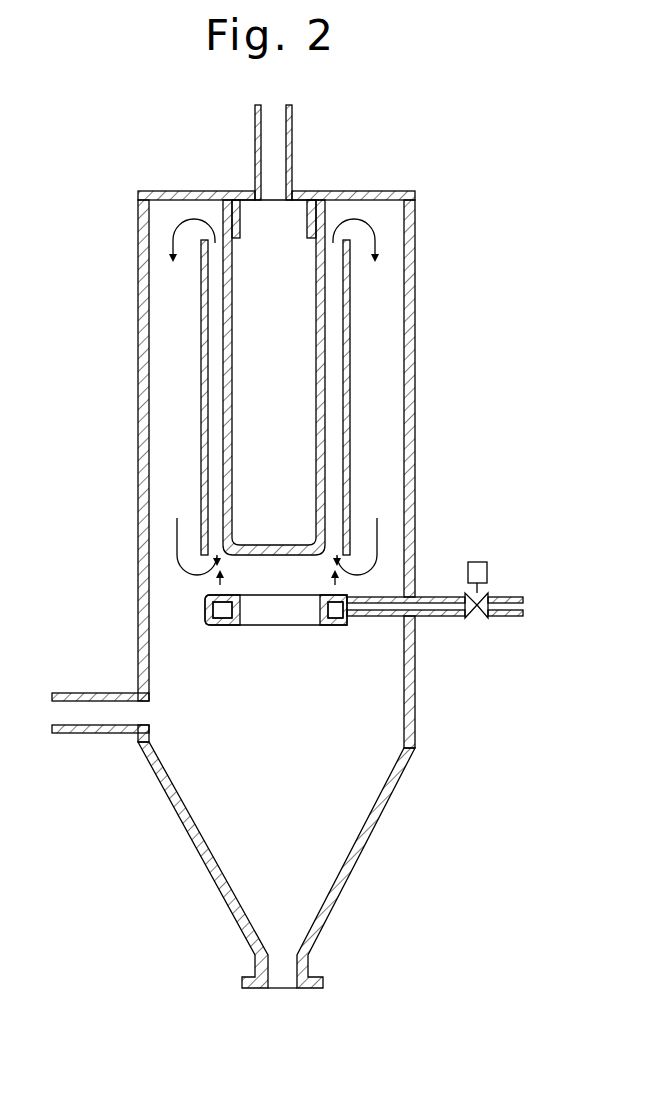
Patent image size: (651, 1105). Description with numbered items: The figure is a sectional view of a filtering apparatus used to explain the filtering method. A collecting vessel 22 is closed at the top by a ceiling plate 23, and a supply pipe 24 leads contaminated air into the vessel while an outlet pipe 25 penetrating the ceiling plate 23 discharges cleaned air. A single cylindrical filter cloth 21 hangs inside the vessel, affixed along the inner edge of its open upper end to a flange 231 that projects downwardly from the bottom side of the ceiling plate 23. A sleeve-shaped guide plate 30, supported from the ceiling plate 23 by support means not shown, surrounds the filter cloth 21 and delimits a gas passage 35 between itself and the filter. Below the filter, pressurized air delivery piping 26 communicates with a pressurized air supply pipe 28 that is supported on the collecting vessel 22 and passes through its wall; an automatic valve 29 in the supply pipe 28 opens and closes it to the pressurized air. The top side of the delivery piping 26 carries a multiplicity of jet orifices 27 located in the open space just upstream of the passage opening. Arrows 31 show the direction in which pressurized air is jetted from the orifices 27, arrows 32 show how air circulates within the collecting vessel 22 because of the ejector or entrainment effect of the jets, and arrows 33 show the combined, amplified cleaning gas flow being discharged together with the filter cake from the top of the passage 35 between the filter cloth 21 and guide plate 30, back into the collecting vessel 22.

The filter cloth 21 is at (323, 358).
The collecting vessel 22 is at (415, 457).
The ceiling plate 23 is at (375, 190).
The flange 231 is at (237, 202).
The supply pipe 24 is at (88, 735).
The outlet pipe 25 is at (292, 155).
The pressurized air delivery piping 26 is at (286, 639).
The jet orifices 27 is at (222, 622).
The pressurized air supply pipe 28 is at (450, 618).
The automatic valve 29 is at (487, 565).
The guide plate 30 is at (350, 415).
The arrows 31 is at (223, 583).
The arrows 32 is at (177, 573).
The arrows 33 is at (366, 235).
The gas passage 35 is at (332, 470).